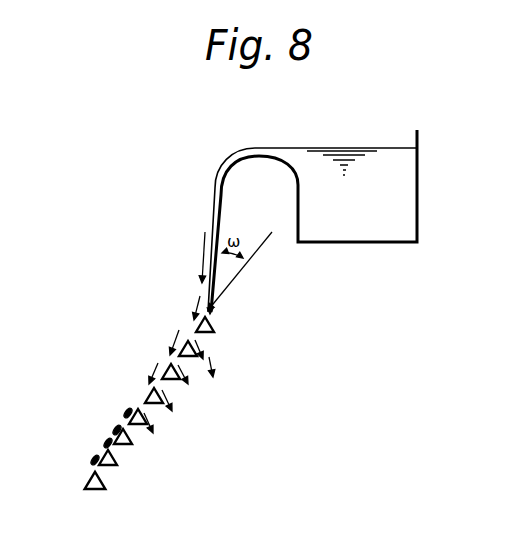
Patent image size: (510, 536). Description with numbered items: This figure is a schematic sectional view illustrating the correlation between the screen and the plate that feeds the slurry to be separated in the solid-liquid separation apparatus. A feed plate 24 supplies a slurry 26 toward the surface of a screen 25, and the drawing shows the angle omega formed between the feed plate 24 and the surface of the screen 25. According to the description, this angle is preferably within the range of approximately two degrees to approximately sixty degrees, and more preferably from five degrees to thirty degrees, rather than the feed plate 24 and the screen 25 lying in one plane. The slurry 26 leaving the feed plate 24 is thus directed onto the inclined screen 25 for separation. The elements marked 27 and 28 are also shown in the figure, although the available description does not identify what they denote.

The feed plate 24 is at (227, 203).
The screen 25 is at (116, 458).
The slurry 26 is at (205, 260).
The flow direction arrows 27 is at (213, 362).
The liquid droplets 28 is at (124, 415).